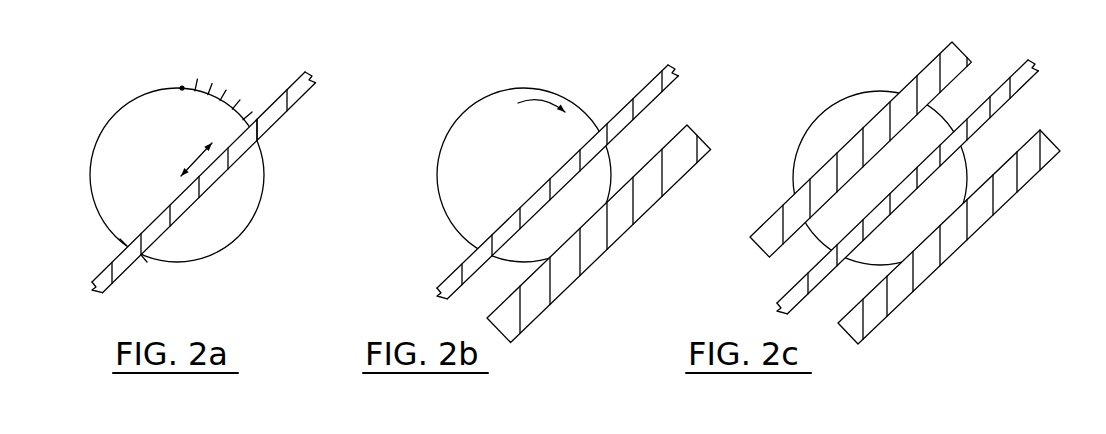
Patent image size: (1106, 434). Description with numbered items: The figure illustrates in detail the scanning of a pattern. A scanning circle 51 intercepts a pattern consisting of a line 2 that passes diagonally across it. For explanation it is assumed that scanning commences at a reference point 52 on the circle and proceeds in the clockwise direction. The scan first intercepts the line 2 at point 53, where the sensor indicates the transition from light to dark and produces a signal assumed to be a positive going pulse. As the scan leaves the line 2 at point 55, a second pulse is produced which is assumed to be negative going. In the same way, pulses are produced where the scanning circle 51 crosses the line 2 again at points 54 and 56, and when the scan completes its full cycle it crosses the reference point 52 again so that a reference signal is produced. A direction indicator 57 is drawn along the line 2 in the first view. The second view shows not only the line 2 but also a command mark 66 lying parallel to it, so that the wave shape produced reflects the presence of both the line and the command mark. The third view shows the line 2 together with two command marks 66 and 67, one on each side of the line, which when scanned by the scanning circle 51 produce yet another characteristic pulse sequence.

In FIG. 2A, the line 2 is at (313, 77).
In FIG. 2B, the line 2 is at (682, 82).
In FIG. 2C, the line 2 is at (1028, 87).
In FIG. 2A, the scanning circle 51 is at (98, 142).
In FIG. 2B, the scanning circle 51 is at (502, 88).
In FIG. 2C, the scanning circle 51 is at (873, 92).
In FIG. 2A, the reference point 52 is at (182, 88).
In FIG. 2A, the intercept point 53 is at (250, 114).
In FIG. 2A, the crossing point 54 is at (143, 258).
In FIG. 2A, the exit point 55 is at (258, 140).
In FIG. 2A, the crossing point 56 is at (123, 242).
In FIG. 2A, the direction of movement 57 is at (191, 160).
In FIG. 2B, the command mark 66 is at (677, 170).
In FIG. 2C, the command mark 66 is at (1037, 168).
In FIG. 2C, the command mark 67 is at (928, 70).